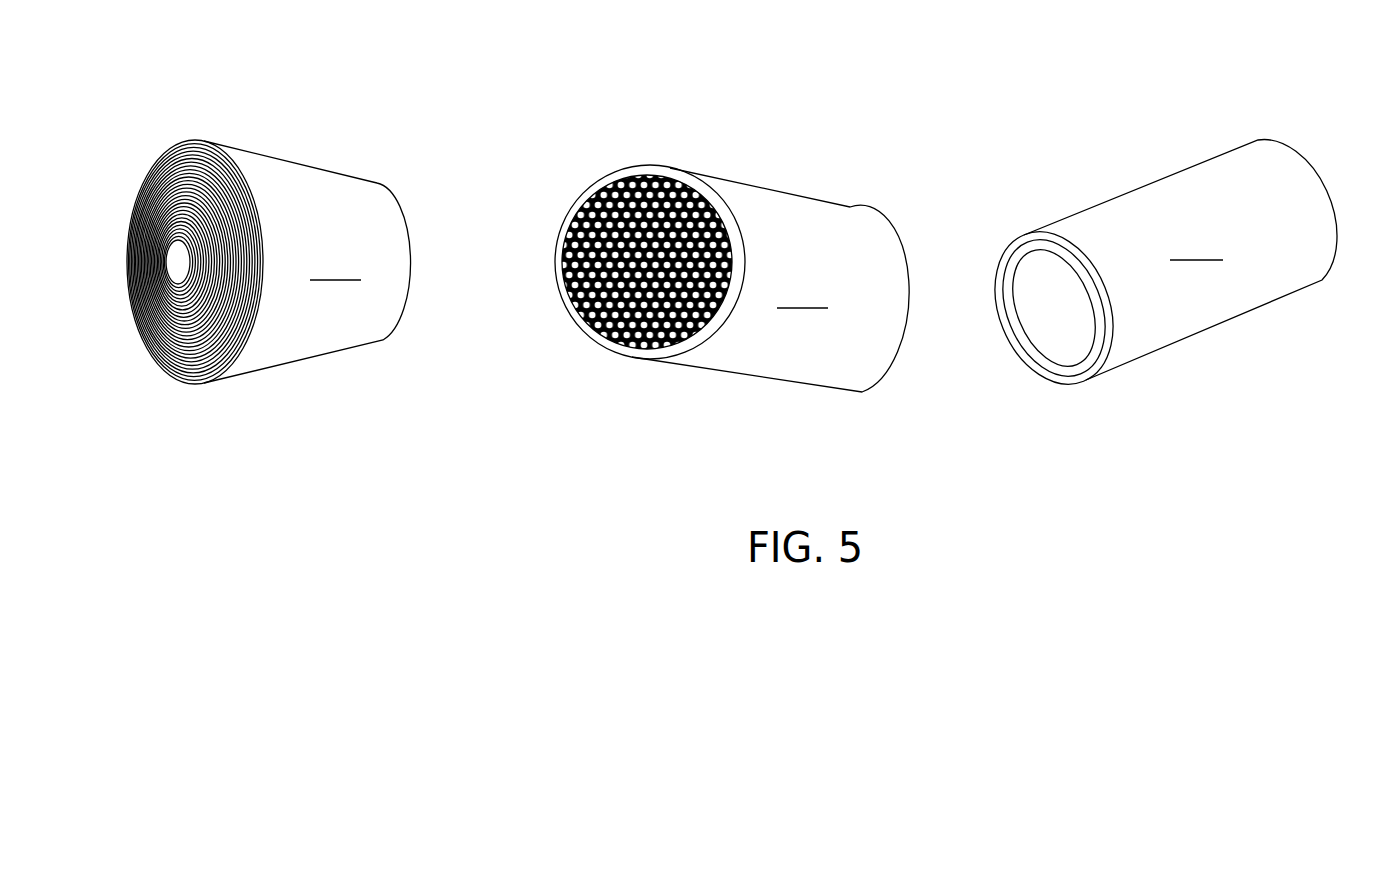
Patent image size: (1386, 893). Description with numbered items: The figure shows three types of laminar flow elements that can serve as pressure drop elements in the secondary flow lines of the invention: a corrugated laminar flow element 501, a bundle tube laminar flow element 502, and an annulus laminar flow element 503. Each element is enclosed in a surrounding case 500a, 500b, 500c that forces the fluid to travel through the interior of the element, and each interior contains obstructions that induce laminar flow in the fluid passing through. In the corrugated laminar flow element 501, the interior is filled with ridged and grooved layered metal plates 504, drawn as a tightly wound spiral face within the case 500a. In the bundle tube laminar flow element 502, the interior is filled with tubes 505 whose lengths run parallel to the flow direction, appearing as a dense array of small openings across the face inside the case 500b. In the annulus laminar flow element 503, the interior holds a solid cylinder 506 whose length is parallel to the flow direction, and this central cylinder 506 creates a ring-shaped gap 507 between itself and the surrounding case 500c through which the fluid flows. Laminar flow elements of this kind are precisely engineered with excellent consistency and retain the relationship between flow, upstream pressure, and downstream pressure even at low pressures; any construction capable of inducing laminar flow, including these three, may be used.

The corrugated laminar flow element 501 is at (269, 253).
The bundle tube laminar flow element 502 is at (732, 252).
The annulus laminar flow element 503 is at (1153, 258).
The ridged and grooved layered metal plates 504 is at (175, 352).
The tubes 505 is at (621, 306).
The solid cylinder 506 is at (1060, 333).
The ring-shaped gap 507 is at (1021, 245).
The surrounding case 500a is at (335, 266).
The surrounding case 500b is at (802, 294).
The surrounding case 500c is at (1196, 246).